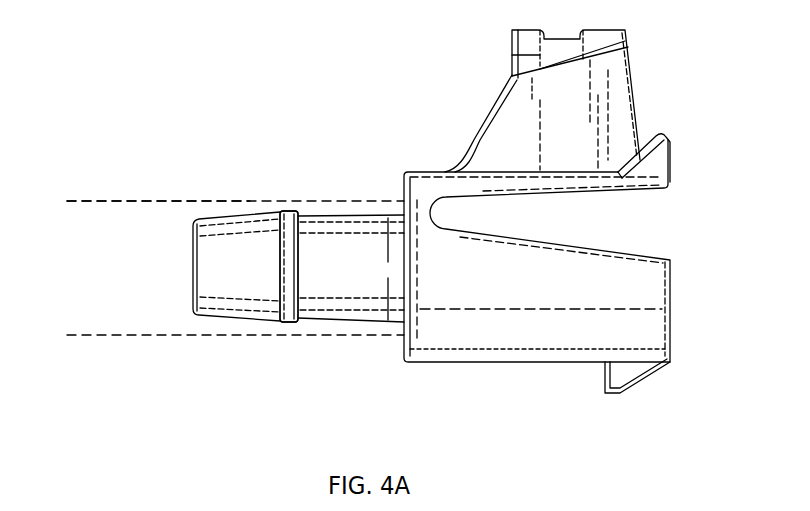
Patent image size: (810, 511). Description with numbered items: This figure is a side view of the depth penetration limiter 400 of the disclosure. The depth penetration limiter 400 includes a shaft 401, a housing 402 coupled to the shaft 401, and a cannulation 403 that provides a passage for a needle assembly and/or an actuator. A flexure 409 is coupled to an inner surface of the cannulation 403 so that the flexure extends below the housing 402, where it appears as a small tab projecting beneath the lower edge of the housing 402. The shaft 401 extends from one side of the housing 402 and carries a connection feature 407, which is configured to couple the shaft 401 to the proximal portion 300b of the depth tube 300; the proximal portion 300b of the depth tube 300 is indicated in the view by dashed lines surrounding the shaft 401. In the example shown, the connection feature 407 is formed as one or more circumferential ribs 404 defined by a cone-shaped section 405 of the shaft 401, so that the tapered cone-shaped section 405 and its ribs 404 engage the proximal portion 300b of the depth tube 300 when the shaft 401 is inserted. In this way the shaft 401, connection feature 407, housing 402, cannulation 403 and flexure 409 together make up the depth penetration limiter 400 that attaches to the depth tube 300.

The depth tube 300 is at (120, 281).
The proximal portion of the depth tube 300b is at (93, 201).
The depth penetration limiter 400 is at (666, 45).
The shaft 401 is at (330, 212).
The housing 402 is at (525, 323).
The cannulation 403 is at (647, 225).
The circumferential ribs 404 is at (298, 324).
The cone-shaped section 405 is at (221, 298).
The connection feature 407 is at (276, 200).
The flexure 409 is at (627, 373).